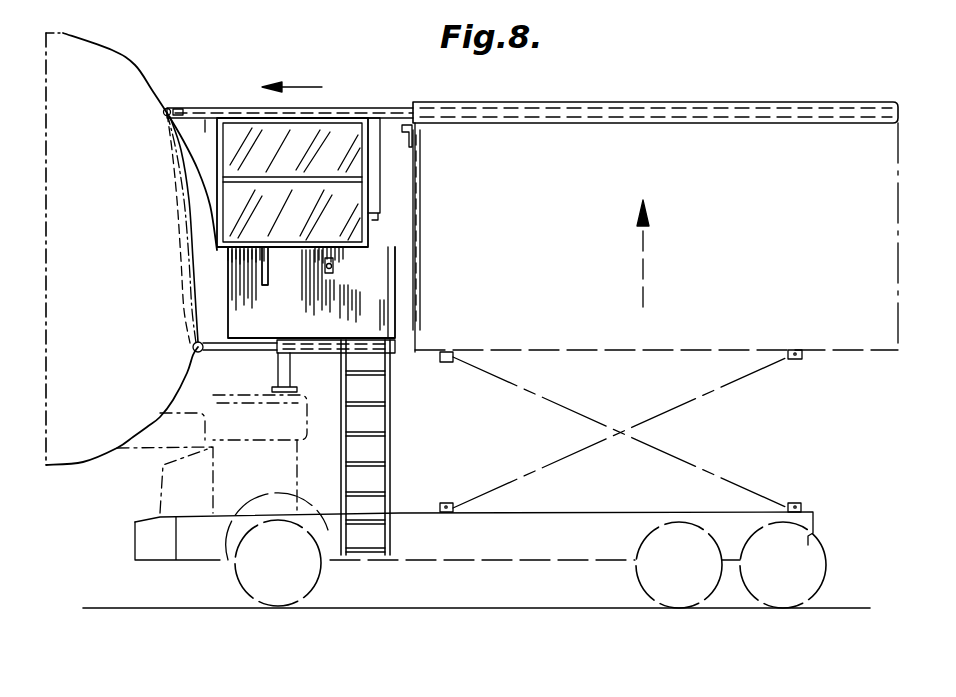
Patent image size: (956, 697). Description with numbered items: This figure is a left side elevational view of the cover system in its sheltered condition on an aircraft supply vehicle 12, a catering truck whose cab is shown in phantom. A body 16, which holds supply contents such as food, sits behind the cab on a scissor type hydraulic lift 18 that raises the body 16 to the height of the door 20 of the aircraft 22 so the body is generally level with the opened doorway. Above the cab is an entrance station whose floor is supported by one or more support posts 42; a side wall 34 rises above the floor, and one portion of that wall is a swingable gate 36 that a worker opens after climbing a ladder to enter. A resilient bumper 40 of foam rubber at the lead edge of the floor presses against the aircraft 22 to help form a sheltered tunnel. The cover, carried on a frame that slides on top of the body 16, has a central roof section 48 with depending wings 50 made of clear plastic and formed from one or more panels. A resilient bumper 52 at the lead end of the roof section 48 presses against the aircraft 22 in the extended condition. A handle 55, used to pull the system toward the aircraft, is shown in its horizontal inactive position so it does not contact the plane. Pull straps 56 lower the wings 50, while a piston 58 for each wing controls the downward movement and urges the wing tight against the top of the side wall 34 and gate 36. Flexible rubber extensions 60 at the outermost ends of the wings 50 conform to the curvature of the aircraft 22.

The aircraft supply vehicle 12 is at (580, 558).
The body 16 is at (834, 317).
The scissor type hydraulic lift 18 is at (686, 405).
The door 20 is at (186, 188).
The aircraft 22 is at (88, 73).
The side wall 34 is at (300, 300).
The swingable gate 36 is at (375, 268).
The resilient bumper 40 is at (194, 350).
The support post 42 is at (280, 362).
The central roof section 48 is at (333, 107).
The wing 50 is at (238, 120).
The resilient bumper 52 is at (167, 109).
The handle 55 is at (186, 121).
The pull strap 56 is at (264, 270).
The piston 58 is at (380, 160).
The flexible extension 60 is at (205, 130).